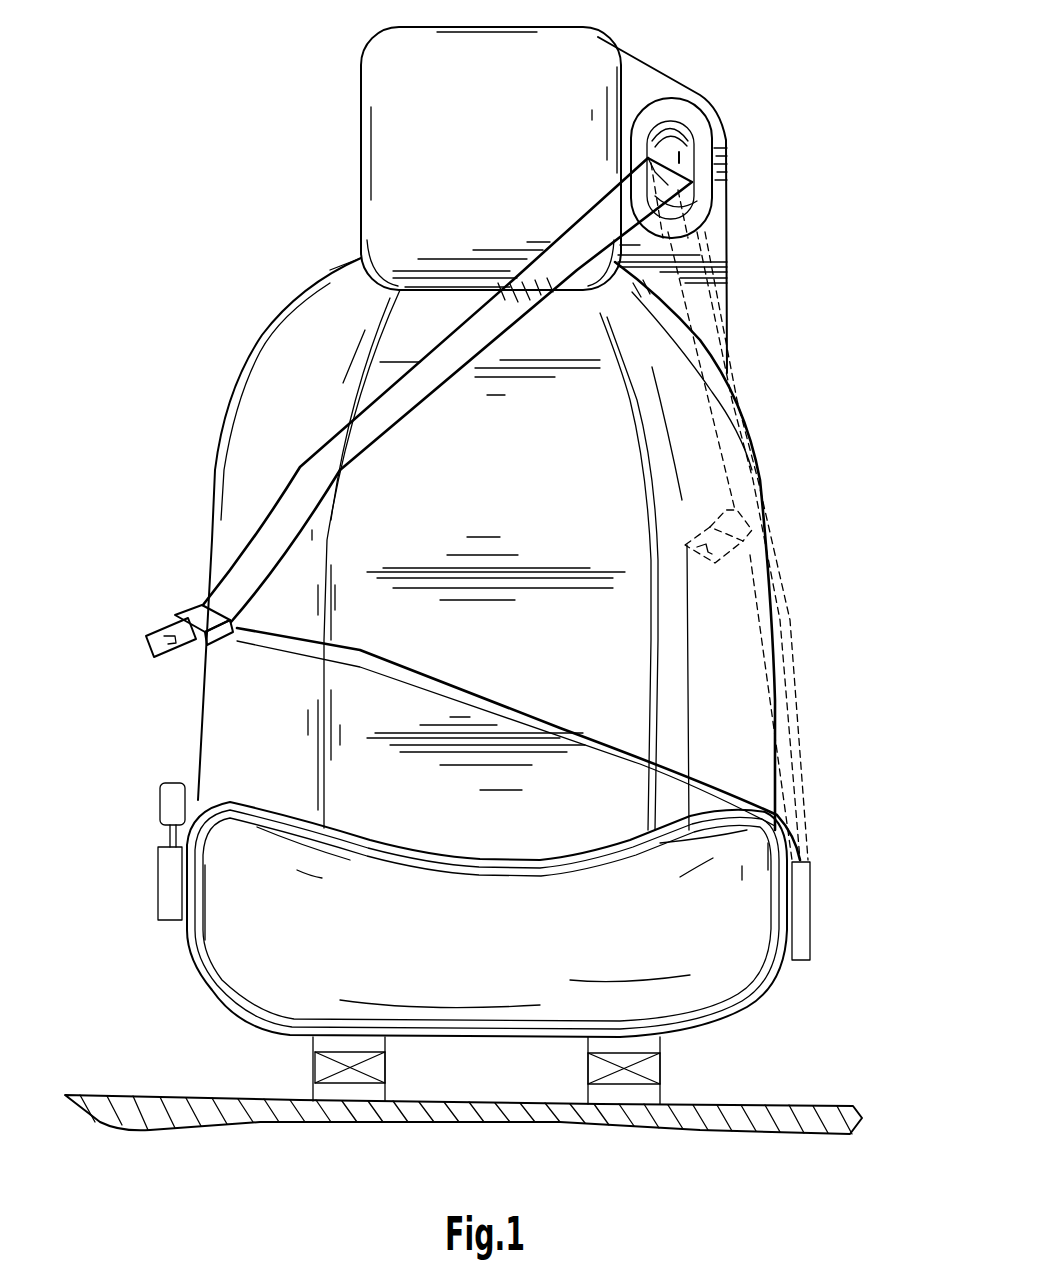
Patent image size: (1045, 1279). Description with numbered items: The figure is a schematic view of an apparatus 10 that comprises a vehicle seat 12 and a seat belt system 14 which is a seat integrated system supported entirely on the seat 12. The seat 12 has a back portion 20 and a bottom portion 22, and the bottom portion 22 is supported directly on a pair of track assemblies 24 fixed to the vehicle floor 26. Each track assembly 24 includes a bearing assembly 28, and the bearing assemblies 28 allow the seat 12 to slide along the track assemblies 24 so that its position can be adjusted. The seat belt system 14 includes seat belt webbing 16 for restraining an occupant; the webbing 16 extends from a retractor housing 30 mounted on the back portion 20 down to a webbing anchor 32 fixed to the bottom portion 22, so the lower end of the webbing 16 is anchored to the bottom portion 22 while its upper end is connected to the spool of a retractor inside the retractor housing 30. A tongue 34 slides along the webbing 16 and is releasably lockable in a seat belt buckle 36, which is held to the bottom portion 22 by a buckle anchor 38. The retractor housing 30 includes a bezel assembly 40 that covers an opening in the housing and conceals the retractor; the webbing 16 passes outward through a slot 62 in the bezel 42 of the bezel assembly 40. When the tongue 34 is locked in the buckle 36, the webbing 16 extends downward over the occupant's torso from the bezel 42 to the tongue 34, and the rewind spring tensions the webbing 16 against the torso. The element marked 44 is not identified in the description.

The apparatus 10 is at (195, 188).
The vehicle seat 12 is at (318, 284).
The seat belt system 14 is at (300, 468).
The seat belt webbing 16 is at (233, 572).
The back portion 20 is at (290, 377).
The bottom portion 22 is at (238, 800).
The track assemblies 24 is at (313, 1068).
The vehicle floor 26 is at (148, 1096).
The bearing assembly 28 is at (375, 1068).
The retractor housing 30 is at (678, 80).
The webbing anchor 32 is at (800, 920).
The tongue 34 is at (170, 628).
The seat belt buckle 36 is at (168, 807).
The buckle anchor 38 is at (168, 893).
The bezel assembly 40 is at (725, 135).
The bezel 42 is at (682, 158).
The inner slot opening 44 is at (693, 118).
The slot 62 is at (692, 182).